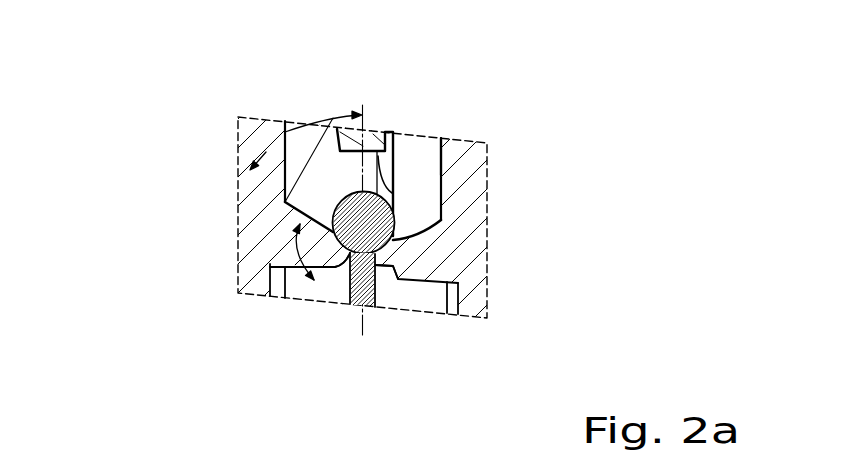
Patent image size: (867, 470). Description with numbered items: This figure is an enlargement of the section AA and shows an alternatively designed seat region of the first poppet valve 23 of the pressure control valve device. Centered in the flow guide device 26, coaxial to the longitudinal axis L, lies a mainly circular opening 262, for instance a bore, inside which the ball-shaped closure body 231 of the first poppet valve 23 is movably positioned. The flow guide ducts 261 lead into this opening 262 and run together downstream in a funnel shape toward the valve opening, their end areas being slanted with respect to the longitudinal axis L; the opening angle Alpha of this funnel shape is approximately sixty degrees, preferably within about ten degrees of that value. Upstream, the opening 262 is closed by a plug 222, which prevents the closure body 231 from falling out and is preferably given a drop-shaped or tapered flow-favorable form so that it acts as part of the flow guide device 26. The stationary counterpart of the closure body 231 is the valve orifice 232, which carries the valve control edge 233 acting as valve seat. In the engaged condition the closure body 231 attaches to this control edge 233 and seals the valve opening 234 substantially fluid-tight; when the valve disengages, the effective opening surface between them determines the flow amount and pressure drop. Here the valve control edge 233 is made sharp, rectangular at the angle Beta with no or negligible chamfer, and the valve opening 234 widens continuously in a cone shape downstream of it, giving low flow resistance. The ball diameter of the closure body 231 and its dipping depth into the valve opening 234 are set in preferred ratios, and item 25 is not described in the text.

The flow guide ducts 261 is at (285, 202).
The opening 262 is at (333, 191).
The plug 222 is at (377, 147).
The flow guide device 26 is at (448, 154).
The valve control edge 233 is at (400, 250).
The first poppet valve 23 is at (434, 257).
The valve orifice 232 is at (400, 266).
The closure body 231 is at (344, 257).
The valve ball and stem 25 is at (367, 303).
The valve opening 234 is at (386, 285).
The section AA is at (238, 123).
The opening angle Alpha is at (297, 129).
The longitudinal axis L is at (373, 143).
The angle of the valve control edge Beta is at (298, 226).